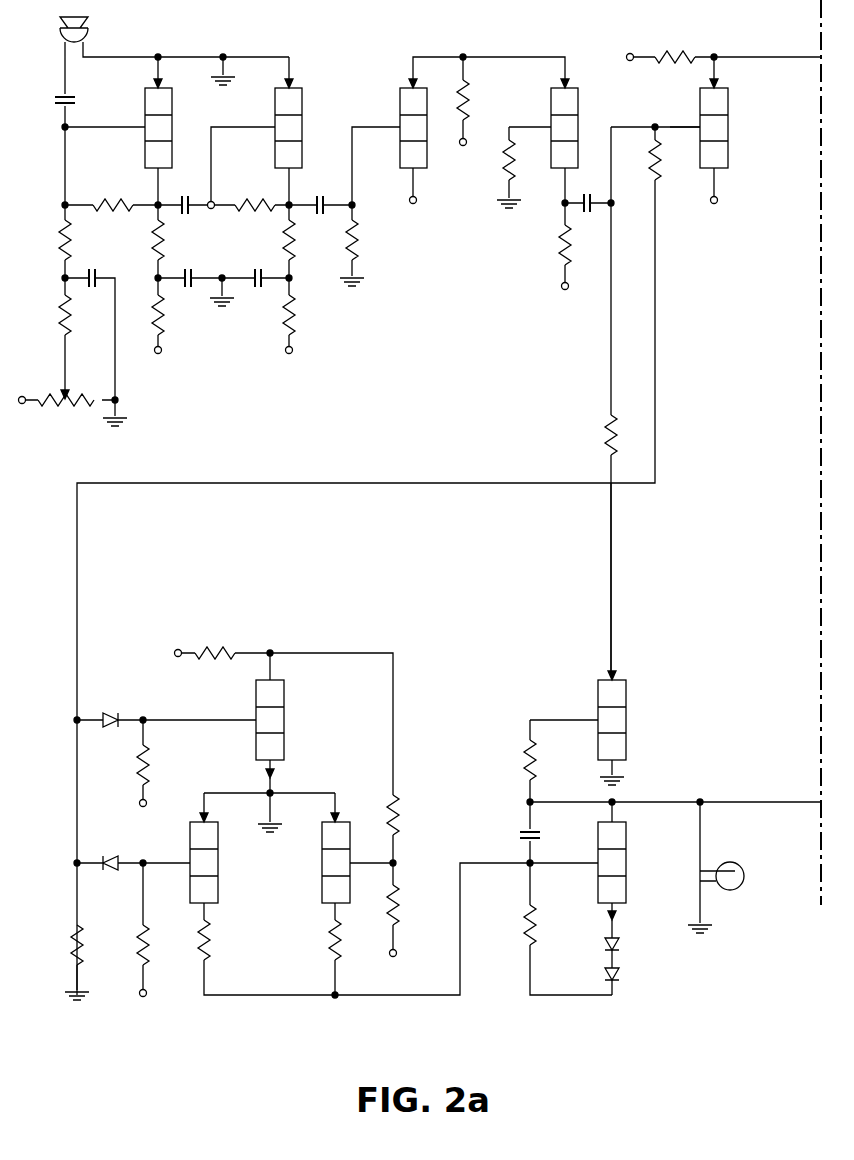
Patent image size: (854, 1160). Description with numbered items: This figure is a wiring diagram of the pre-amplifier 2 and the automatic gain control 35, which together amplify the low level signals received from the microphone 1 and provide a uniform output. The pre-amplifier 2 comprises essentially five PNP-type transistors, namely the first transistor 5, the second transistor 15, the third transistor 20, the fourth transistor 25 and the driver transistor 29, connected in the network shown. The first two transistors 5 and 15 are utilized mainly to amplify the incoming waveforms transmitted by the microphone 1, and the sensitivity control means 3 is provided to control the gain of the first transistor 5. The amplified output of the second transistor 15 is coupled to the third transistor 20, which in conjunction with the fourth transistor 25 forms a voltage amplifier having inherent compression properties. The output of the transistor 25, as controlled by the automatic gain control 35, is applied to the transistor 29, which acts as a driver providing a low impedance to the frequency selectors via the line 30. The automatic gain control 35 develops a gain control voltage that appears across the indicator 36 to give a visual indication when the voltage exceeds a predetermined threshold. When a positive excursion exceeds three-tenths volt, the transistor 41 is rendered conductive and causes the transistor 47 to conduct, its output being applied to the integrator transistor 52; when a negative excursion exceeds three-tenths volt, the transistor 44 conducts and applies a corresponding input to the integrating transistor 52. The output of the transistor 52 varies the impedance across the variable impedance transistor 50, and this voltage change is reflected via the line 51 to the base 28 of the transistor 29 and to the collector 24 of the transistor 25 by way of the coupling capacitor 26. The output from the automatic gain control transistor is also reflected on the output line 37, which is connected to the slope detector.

The microphone 1 is at (88, 33).
The pre-amplifier 2 is at (411, 506).
The sensitivity control means 3 is at (70, 392).
The first transistor 5 is at (172, 124).
The second transistor 15 is at (302, 128).
The third transistor 20 is at (400, 112).
The collector 24 is at (565, 184).
The fourth transistor 25 is at (578, 120).
The coupling capacitor 26 is at (590, 212).
The base 28 is at (684, 125).
The transistor 29 is at (728, 118).
The line 30 is at (778, 60).
The automatic gain control 35 is at (442, 763).
The indicator 36 is at (735, 862).
The output line 37 is at (768, 803).
The transistor 41 is at (284, 718).
The transistor 44 is at (218, 857).
The transistor 47 is at (322, 853).
The variable impedance transistor 50 is at (636, 703).
The line 51 is at (608, 578).
The integrator transistor 52 is at (626, 858).